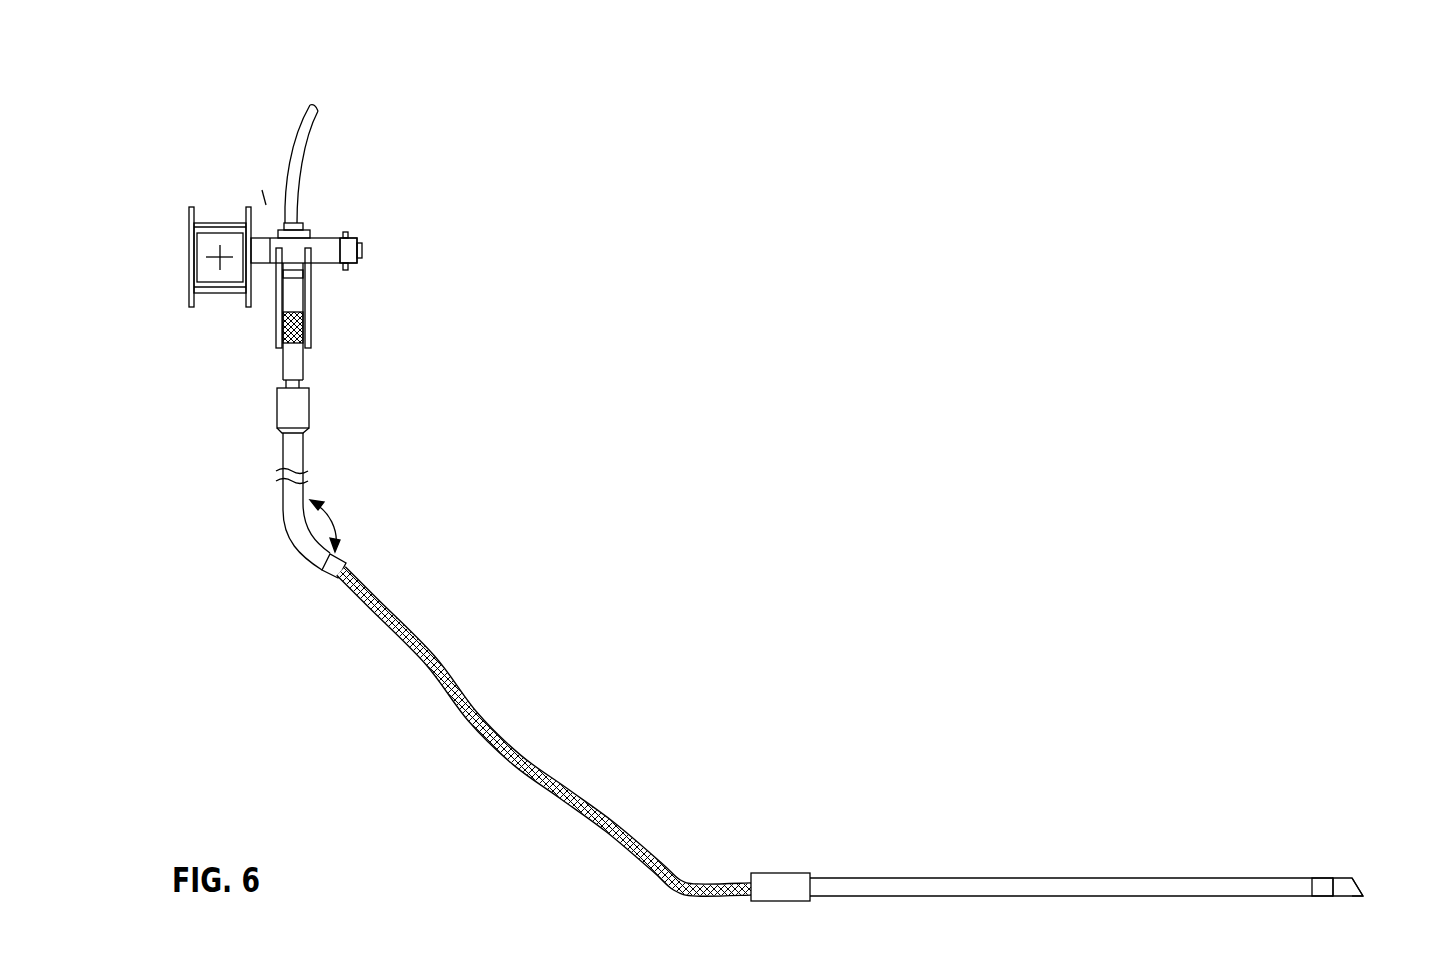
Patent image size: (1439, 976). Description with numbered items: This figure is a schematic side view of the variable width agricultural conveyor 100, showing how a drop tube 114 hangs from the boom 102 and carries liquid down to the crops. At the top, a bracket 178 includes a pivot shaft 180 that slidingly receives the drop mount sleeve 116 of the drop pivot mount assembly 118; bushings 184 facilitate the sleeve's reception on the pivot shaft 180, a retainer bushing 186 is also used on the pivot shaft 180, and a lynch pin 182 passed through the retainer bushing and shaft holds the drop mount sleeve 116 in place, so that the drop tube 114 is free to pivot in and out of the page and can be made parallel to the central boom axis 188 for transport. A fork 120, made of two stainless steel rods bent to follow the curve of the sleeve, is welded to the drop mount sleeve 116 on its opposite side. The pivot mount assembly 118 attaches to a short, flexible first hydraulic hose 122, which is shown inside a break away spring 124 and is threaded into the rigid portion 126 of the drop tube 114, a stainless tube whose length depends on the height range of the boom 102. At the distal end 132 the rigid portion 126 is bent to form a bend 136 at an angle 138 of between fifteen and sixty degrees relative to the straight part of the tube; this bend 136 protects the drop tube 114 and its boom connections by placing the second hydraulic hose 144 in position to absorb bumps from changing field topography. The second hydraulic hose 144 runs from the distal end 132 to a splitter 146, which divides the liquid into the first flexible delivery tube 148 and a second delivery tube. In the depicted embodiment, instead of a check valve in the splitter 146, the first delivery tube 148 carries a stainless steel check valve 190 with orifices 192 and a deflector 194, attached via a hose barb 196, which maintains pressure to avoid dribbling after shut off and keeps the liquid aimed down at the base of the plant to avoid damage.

The variable width agricultural conveyor 100 is at (692, 162).
The boom 102 is at (212, 229).
The drop tube 114 is at (422, 213).
The drop mount sleeve 116 is at (325, 238).
The drop pivot mount assembly 118 is at (263, 190).
The fork 120 is at (306, 317).
The first hydraulic hose 122 is at (284, 322).
The break away spring 124 is at (296, 288).
The rigid portion 126 is at (262, 450).
The distal end 132 is at (284, 508).
The bend 136 is at (285, 532).
The angle 138 is at (337, 518).
The second hydraulic hose 144 is at (435, 653).
The splitter 146 is at (780, 882).
The first flexible delivery tube 148 is at (950, 877).
The bracket 178 is at (192, 207).
The pivot shaft 180 is at (360, 250).
The lynch pin 182 is at (342, 232).
The bushings 184 is at (255, 243).
The retainer bushing 186 is at (350, 247).
The central boom axis 188 is at (222, 252).
The stainless steel check valve 190 is at (1345, 883).
The orifices 192 is at (1364, 895).
The deflector 194 is at (1357, 882).
The hose barb 196 is at (1313, 878).